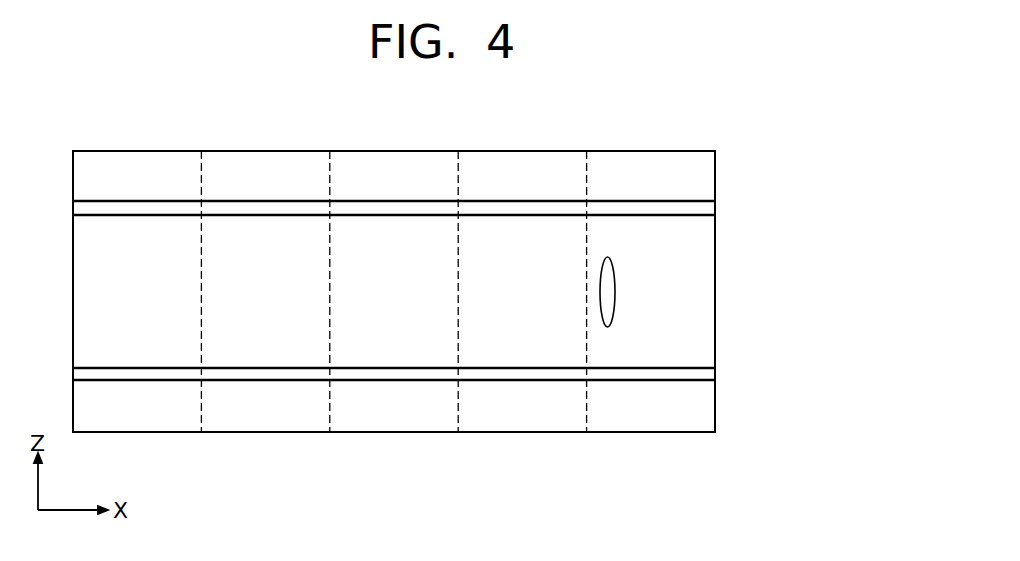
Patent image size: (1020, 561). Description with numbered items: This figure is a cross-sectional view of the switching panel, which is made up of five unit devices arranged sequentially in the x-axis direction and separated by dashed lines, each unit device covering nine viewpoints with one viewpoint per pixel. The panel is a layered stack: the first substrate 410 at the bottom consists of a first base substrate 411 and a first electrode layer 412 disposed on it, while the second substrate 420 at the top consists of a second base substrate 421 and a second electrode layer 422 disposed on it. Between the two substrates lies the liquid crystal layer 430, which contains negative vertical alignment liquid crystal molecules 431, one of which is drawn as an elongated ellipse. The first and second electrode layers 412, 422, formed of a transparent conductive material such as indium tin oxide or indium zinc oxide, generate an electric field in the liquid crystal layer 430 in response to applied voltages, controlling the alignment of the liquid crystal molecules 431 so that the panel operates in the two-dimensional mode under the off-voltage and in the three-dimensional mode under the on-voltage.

The first substrate 410 is at (461, 392).
The first base substrate 411 is at (702, 408).
The first electrode layer 412 is at (702, 377).
The second substrate 420 is at (461, 194).
The second base substrate 421 is at (702, 178).
The second electrode layer 422 is at (702, 209).
The liquid crystal layer 430 is at (702, 314).
The liquid crystal molecules 431 is at (614, 268).